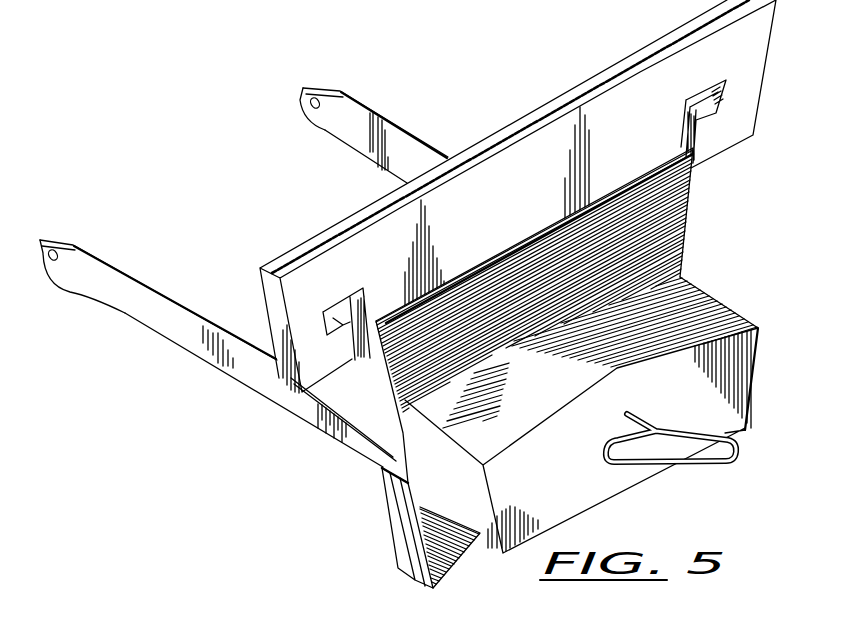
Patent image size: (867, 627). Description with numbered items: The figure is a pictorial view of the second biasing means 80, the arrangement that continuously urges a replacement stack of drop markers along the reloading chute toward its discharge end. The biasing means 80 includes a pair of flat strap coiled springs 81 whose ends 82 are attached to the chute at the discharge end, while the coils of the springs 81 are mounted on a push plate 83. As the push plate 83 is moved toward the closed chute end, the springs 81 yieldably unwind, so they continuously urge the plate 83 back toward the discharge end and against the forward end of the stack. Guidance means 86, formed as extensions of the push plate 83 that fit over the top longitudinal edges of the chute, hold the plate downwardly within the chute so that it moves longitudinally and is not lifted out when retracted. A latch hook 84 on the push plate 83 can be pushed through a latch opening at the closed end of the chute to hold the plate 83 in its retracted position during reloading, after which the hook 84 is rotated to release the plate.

The second biasing means 80 is at (372, 484).
The flat strap coiled springs 81 is at (387, 167).
The ends 82 is at (348, 127).
The push plate 83 is at (398, 542).
The latch hook 84 is at (683, 468).
The guidance means 86 is at (728, 128).